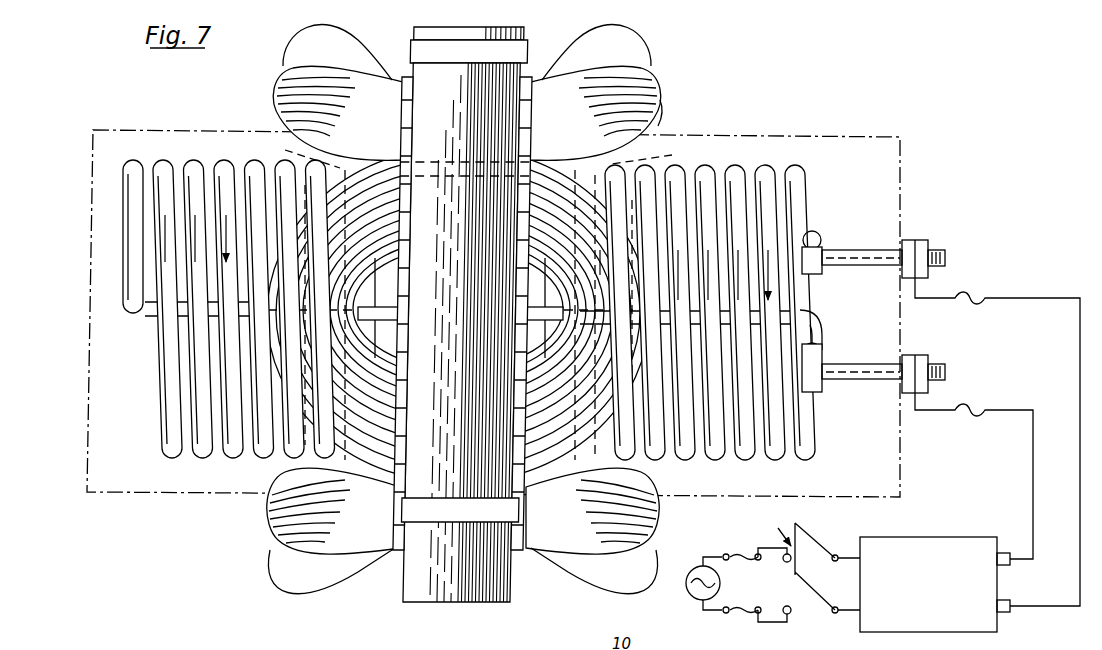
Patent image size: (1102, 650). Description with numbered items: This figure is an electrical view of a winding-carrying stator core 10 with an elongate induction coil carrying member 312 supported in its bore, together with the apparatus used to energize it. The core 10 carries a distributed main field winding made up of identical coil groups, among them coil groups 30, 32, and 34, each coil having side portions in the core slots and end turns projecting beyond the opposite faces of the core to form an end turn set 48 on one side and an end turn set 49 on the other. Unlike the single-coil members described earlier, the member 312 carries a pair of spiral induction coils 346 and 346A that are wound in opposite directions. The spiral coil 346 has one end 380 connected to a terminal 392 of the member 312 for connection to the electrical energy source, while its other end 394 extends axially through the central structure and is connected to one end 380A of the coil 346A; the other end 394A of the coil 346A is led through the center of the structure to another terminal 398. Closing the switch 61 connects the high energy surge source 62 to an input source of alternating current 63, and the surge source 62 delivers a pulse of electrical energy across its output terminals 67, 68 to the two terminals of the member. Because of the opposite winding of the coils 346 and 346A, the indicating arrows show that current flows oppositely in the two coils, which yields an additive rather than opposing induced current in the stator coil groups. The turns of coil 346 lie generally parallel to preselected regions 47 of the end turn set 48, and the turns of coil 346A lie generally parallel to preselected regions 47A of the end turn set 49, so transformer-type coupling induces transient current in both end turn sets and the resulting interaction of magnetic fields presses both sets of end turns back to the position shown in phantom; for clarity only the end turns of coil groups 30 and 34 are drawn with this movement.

The core 10 is at (533, 63).
The coil group 30 is at (657, 92).
The coil group 32 is at (598, 461).
The coil group 34 is at (652, 526).
The preselected regions 47 is at (660, 112).
The preselected regions 47A is at (284, 86).
The end turn set 48 is at (666, 120).
The end turn set 49 is at (273, 97).
The switch 61 is at (810, 542).
The high energy surge source 62 is at (942, 582).
The input source of alternating current 63 is at (688, 592).
The output terminal 67 is at (1004, 553).
The output terminal 68 is at (1006, 614).
The induction coil carrying member 312 is at (833, 136).
The spiral induction coil 346 is at (796, 190).
The spiral induction coil 346A is at (133, 176).
The end of coil 346 380 is at (822, 242).
The end of coil 346A 380A is at (290, 155).
The terminal 392 is at (946, 258).
The other end of coil 346 394 is at (659, 155).
The other end of coil 346A 394A is at (120, 287).
The terminal 398 is at (946, 372).